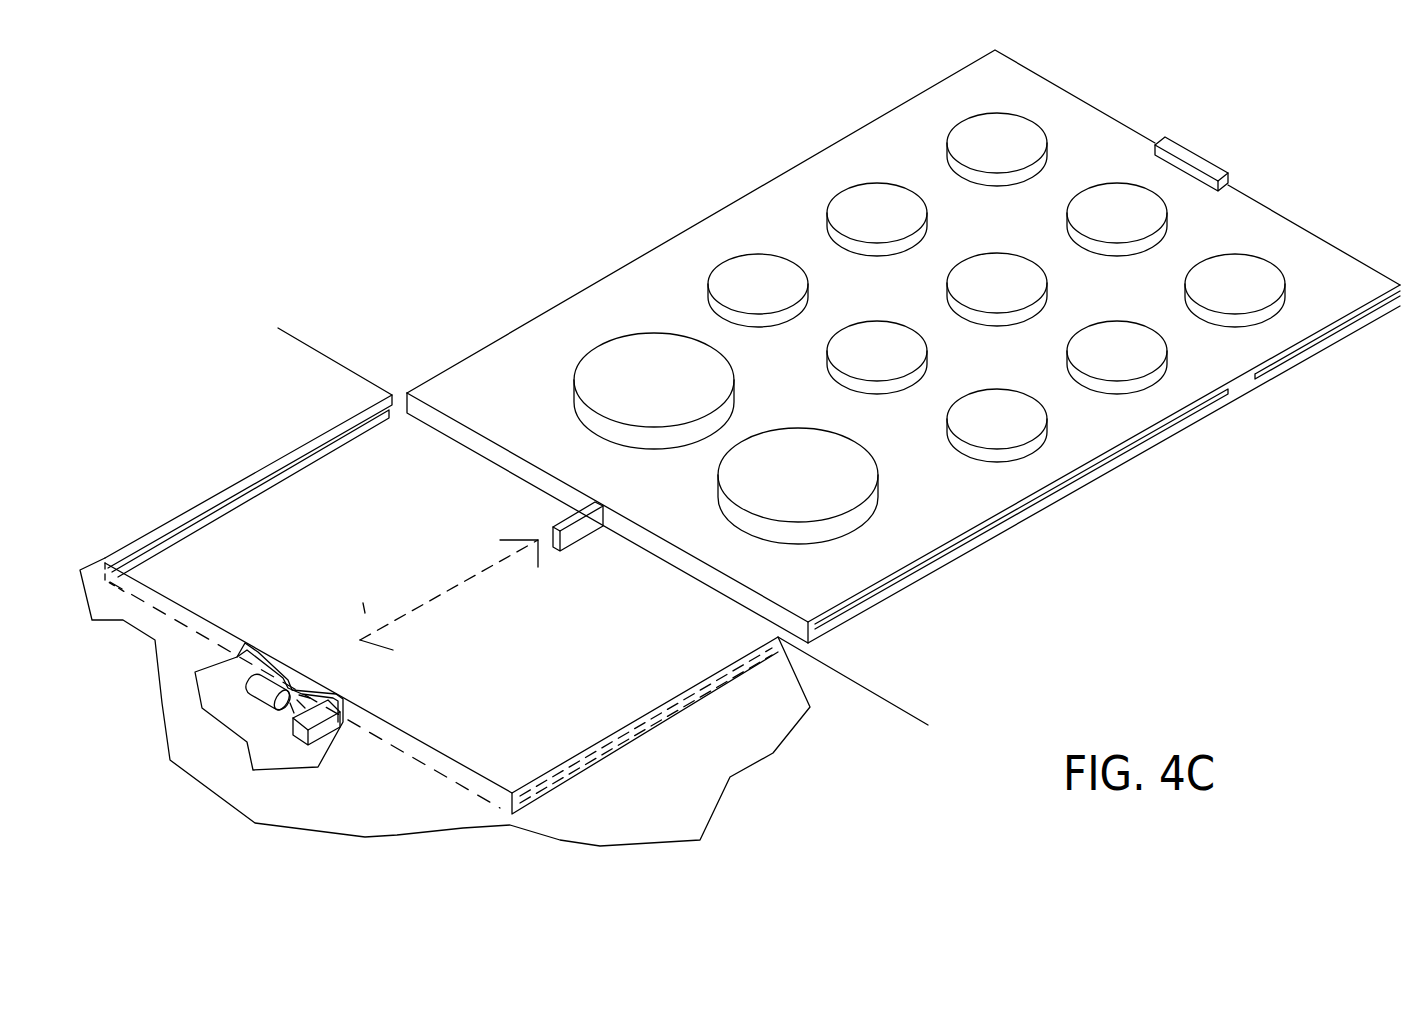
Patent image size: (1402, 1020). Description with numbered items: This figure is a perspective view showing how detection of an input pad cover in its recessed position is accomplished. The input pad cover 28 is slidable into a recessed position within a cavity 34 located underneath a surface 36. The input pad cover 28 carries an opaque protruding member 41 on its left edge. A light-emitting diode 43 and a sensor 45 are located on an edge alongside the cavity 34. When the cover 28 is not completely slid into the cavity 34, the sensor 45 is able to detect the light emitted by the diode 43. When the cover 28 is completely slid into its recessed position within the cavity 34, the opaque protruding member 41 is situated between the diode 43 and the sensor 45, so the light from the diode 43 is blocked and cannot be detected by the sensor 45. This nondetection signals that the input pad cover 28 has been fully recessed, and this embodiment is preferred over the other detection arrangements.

The input pad cover 28 is at (750, 208).
The cavity 34 is at (503, 748).
The surface 36 is at (255, 798).
The opaque protruding member 41 is at (578, 532).
The light-emitting diode 43 is at (262, 683).
The sensor 45 is at (320, 727).